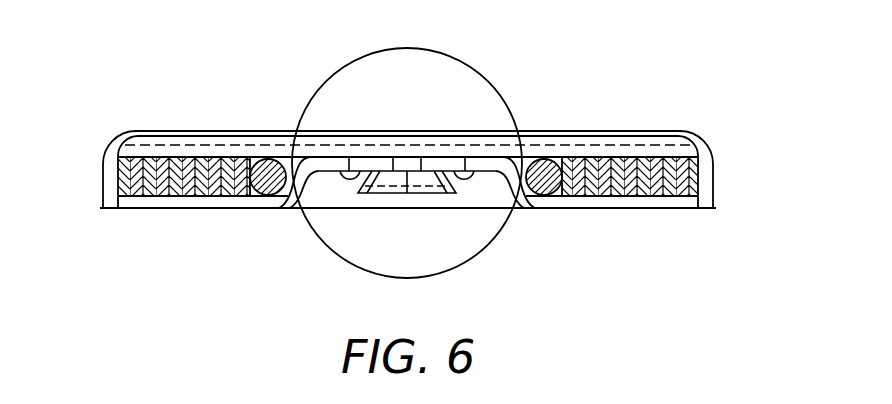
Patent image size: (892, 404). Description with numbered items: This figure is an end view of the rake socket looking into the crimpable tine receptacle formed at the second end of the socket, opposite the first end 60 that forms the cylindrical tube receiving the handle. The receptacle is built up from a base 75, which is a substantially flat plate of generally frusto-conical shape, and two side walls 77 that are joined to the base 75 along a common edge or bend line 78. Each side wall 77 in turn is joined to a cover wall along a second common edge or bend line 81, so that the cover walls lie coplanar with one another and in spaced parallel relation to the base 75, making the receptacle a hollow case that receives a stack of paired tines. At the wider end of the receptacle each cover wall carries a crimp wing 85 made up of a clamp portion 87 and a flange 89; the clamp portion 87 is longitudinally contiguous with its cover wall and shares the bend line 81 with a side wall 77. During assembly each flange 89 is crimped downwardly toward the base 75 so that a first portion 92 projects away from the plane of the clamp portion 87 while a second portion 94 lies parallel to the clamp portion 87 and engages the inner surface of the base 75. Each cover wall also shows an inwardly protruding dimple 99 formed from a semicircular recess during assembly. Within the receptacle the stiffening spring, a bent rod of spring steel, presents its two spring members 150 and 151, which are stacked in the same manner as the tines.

The first end 60 is at (360, 55).
The base 75 is at (622, 131).
The side walls 77 is at (103, 182).
The bend line 78 is at (113, 141).
The bend line 81 is at (103, 209).
The crimp wings 85 is at (233, 210).
The clamp portion 87 is at (147, 209).
The flange 89 is at (316, 208).
The first portion 92 is at (333, 191).
The second portion 94 is at (357, 170).
The dimple 99 is at (408, 166).
The spring member 150 is at (265, 162).
The spring member 151 is at (544, 165).